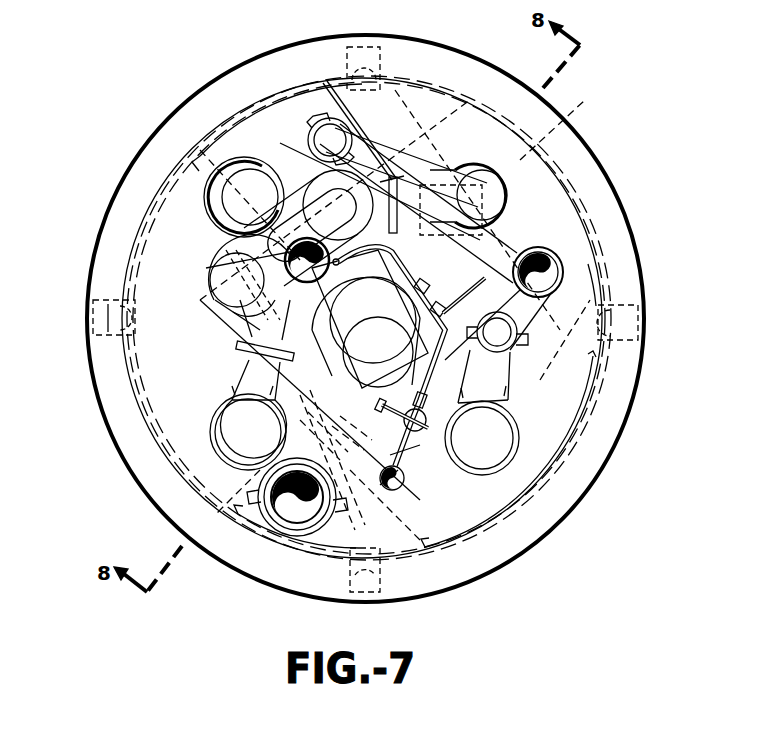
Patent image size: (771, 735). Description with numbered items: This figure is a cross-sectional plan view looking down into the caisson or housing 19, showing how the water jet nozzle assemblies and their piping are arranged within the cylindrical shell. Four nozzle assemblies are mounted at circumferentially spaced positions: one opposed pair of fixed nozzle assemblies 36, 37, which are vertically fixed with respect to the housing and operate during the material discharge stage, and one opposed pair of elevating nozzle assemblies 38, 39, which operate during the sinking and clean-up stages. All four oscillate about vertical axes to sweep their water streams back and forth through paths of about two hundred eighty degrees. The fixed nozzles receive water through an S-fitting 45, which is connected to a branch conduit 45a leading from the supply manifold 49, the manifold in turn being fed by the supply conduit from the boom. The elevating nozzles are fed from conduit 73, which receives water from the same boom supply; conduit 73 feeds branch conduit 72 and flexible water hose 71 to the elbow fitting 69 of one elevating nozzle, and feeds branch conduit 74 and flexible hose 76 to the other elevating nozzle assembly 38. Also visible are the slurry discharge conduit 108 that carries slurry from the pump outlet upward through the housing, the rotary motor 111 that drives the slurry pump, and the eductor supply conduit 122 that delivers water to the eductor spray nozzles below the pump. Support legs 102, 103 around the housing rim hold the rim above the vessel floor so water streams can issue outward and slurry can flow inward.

The housing 19 is at (627, 201).
The fixed nozzle assembly 36 is at (247, 164).
The fixed nozzle assembly 37 is at (520, 444).
The elevating nozzle assembly 38 is at (215, 414).
The elevating nozzle assembly 39 is at (466, 165).
The S-fitting 45 is at (250, 175).
The branch conduit 45a is at (356, 140).
The supply manifold 49 is at (536, 248).
The elbow fitting 69 is at (443, 190).
The flexible water hose 71 is at (250, 255).
The branch conduit 72 is at (240, 298).
The conduit 73 is at (252, 320).
The branch conduit 74 is at (320, 218).
The flexible hose 76 is at (248, 345).
The support leg 102 is at (95, 300).
The support leg 103 is at (380, 592).
The slurry discharge conduit 108 is at (297, 536).
The rotary motor 111 is at (352, 376).
The eductor supply conduit 122 is at (400, 488).